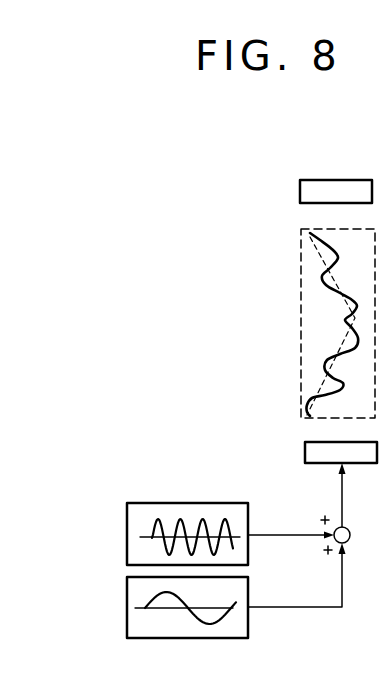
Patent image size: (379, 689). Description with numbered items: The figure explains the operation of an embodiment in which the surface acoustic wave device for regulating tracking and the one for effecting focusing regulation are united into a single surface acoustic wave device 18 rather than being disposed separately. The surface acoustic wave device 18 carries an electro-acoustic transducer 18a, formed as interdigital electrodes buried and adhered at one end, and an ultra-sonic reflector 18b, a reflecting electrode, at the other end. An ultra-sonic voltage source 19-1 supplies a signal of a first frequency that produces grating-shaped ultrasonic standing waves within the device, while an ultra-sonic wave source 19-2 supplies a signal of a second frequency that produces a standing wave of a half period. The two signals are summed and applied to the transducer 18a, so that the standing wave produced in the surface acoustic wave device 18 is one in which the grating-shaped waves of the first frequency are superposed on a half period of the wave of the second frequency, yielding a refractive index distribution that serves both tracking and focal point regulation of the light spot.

The surface acoustic wave device 18 is at (301, 305).
The electro-acoustic transducer 18a is at (305, 450).
The ultra-sonic reflector 18b is at (333, 180).
The ultra-sonic voltage source 19-1 is at (127, 527).
The ultra-sonic wave source 19-2 is at (127, 603).